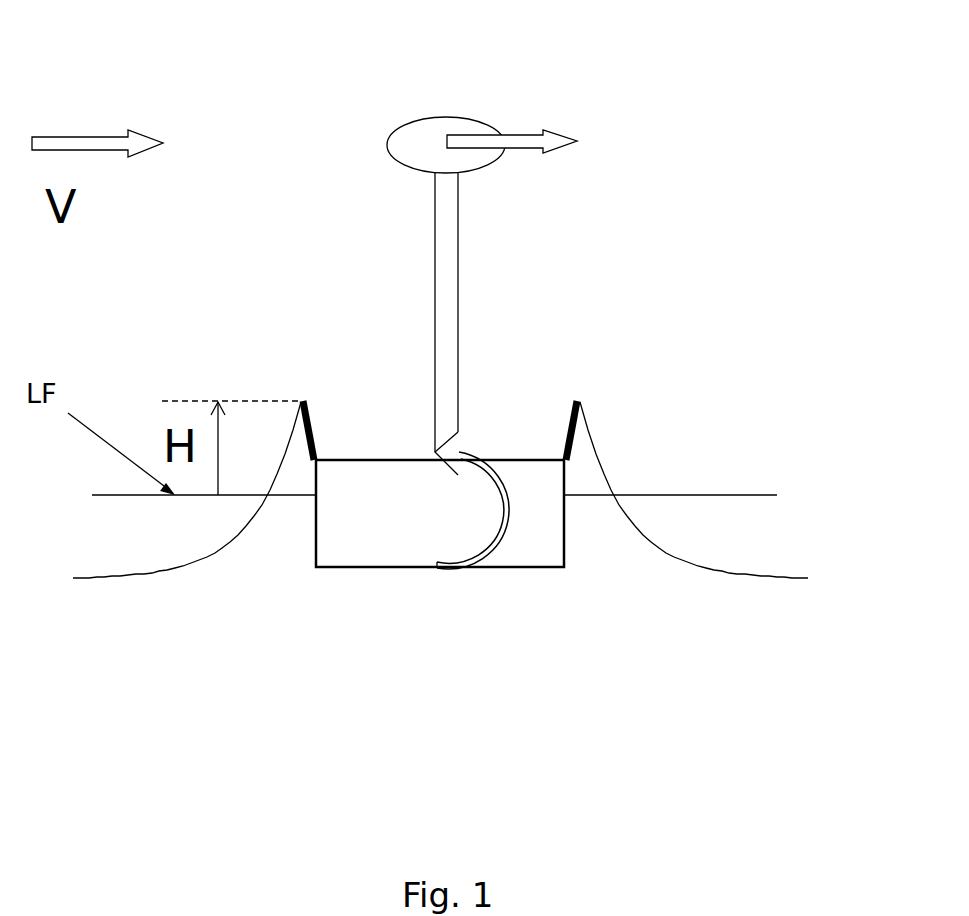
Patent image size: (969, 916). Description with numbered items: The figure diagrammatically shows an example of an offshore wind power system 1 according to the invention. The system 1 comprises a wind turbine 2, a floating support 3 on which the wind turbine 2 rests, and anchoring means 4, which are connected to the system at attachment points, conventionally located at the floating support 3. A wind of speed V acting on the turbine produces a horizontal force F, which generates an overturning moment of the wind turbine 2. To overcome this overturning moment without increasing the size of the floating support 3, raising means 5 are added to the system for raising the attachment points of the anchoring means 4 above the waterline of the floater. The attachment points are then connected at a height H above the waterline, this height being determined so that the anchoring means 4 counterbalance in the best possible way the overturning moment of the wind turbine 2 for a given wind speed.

The offshore wind power system 1 is at (300, 206).
The wind turbine 2 is at (467, 281).
The floating support 3 is at (526, 575).
The anchoring means 4 is at (660, 526).
The raising means 5 is at (588, 391).